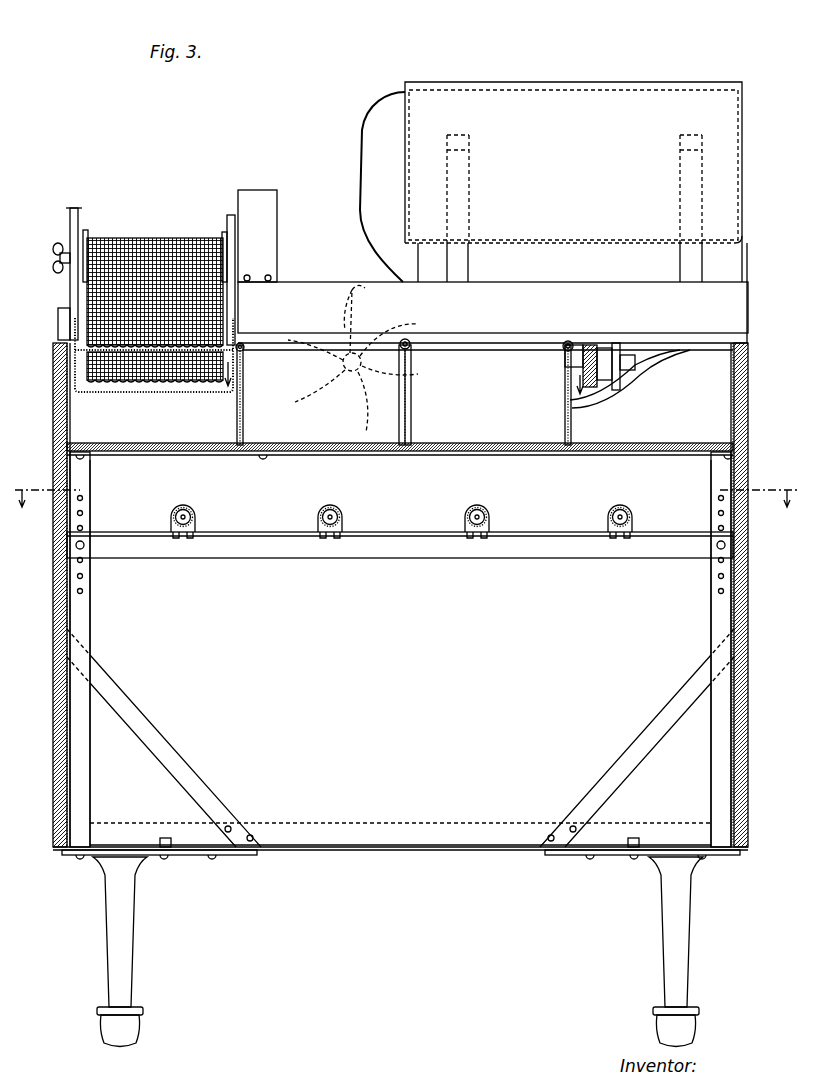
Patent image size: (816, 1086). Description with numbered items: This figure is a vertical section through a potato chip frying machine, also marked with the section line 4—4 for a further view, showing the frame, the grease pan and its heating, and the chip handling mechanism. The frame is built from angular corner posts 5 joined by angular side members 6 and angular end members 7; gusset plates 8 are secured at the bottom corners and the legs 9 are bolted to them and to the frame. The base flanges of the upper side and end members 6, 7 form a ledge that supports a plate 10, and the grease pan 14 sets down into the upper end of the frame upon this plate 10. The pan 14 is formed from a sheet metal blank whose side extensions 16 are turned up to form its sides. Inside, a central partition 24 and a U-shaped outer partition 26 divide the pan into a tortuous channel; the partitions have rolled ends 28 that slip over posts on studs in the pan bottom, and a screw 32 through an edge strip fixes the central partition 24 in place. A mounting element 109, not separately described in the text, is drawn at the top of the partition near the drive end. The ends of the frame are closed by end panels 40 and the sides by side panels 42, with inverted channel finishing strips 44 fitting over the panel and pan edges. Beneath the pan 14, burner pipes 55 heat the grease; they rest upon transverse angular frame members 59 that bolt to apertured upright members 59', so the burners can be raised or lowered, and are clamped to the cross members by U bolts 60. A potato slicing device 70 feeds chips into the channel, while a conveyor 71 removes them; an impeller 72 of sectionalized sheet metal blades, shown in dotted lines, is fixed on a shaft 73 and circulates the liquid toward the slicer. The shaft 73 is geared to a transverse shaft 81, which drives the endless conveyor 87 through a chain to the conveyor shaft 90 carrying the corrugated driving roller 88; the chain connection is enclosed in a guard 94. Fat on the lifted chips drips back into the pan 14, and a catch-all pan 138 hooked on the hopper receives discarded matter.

The section line 4- 4 is at (26, 484).
The corner posts 5 is at (409, 379).
The side members 6 is at (60, 433).
The end members 7 is at (330, 452).
The gusset plates 8 is at (198, 855).
The legs 9 is at (135, 947).
The plate 10 is at (388, 452).
The grease pan 14 is at (488, 446).
The side extensions 16 is at (68, 406).
The central partition 24 is at (410, 420).
The outer partition 26 is at (243, 424).
The rolled ends 28 is at (410, 398).
The screw 32 is at (412, 340).
The end panels 40 is at (400, 738).
The side panels 42 is at (65, 455).
The finishing strips 44 is at (57, 338).
The burners 55 is at (195, 514).
The transverse angular frame members 59 is at (400, 560).
The upright members 59' is at (403, 653).
The U bolts 60 is at (192, 510).
The potato slicing device 70 is at (385, 92).
The conveyor 71 is at (84, 226).
The impeller 72 is at (352, 288).
The shaft 73 is at (343, 364).
The transverse shaft 81 is at (577, 370).
The endless conveyor 87 is at (160, 226).
The driving roller 88 is at (92, 246).
The conveyor shaft 90 is at (58, 252).
The guard 94 is at (260, 200).
The pivot mount 109 is at (573, 348).
The catch-all pan 138 is at (520, 100).